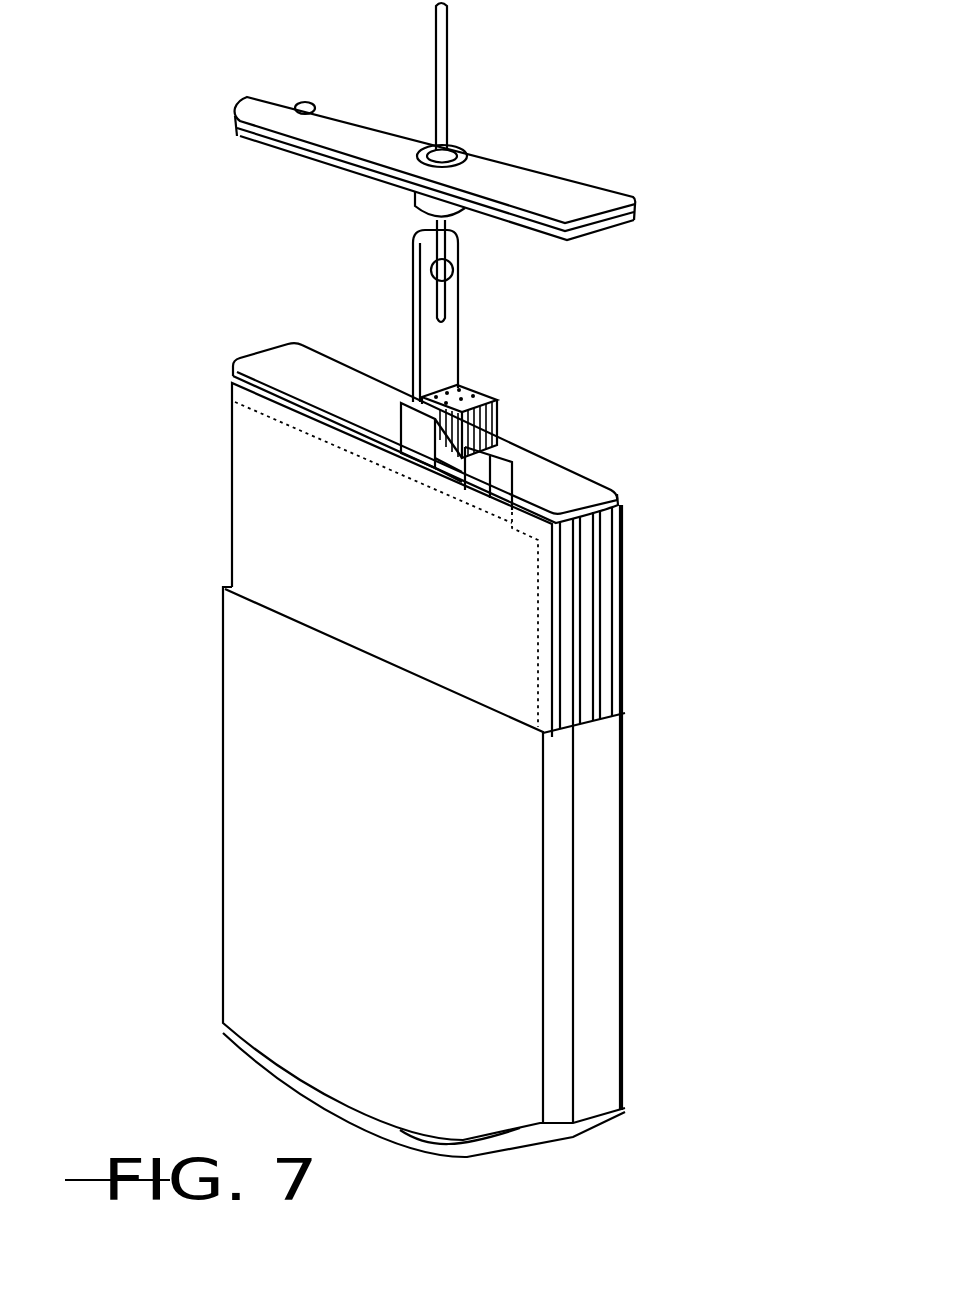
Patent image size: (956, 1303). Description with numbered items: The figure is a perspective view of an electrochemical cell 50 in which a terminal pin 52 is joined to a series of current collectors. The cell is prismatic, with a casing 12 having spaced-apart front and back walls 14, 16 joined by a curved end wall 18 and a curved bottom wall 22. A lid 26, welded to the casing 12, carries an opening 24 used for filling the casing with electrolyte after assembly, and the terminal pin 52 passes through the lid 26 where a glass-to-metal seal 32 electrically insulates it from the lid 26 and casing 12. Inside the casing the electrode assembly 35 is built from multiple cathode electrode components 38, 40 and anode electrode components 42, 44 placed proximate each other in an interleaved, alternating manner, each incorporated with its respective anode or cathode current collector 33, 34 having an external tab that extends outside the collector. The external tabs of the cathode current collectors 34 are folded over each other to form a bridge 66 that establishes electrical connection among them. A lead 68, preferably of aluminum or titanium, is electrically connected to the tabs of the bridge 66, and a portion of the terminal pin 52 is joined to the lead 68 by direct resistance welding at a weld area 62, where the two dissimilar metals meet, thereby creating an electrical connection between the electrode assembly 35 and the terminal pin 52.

The casing 12 is at (284, 758).
The front wall 14 is at (307, 870).
The back wall 16 is at (625, 847).
The curved end wall 18 is at (600, 935).
The curved bottom wall 22 is at (413, 1140).
The opening 24 is at (305, 101).
The lid 26 is at (557, 188).
The glass-to-metal seal 32 is at (466, 151).
The anode current collector 33 is at (503, 463).
The cathode current collector 34 is at (503, 402).
The electrode assembly 35 is at (645, 613).
The cathode electrode component 38 is at (573, 657).
The cathode electrode component 40 is at (597, 560).
The anode electrode component 42 is at (618, 527).
The anode electrode component 44 is at (590, 622).
The electrochemical cell 50 is at (162, 416).
The terminal pin 52 is at (449, 55).
The weld area 62 is at (452, 268).
The bridge 66 is at (400, 360).
The lead 68 is at (447, 354).